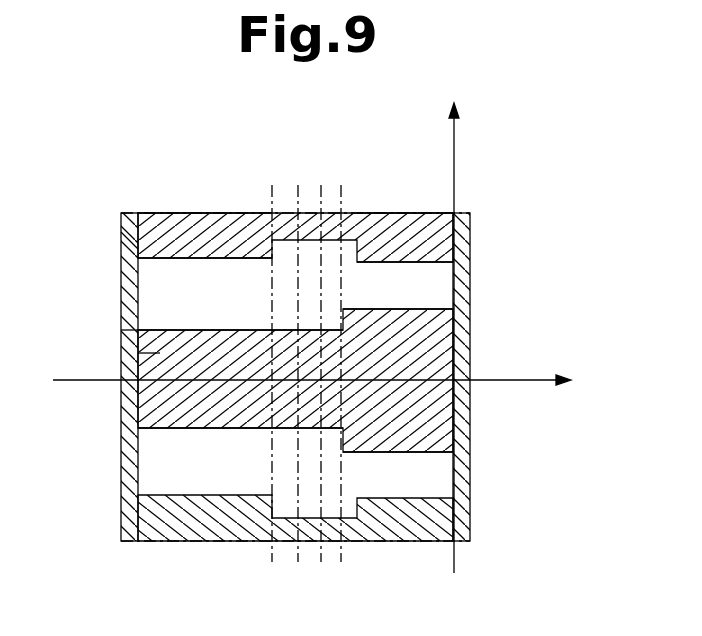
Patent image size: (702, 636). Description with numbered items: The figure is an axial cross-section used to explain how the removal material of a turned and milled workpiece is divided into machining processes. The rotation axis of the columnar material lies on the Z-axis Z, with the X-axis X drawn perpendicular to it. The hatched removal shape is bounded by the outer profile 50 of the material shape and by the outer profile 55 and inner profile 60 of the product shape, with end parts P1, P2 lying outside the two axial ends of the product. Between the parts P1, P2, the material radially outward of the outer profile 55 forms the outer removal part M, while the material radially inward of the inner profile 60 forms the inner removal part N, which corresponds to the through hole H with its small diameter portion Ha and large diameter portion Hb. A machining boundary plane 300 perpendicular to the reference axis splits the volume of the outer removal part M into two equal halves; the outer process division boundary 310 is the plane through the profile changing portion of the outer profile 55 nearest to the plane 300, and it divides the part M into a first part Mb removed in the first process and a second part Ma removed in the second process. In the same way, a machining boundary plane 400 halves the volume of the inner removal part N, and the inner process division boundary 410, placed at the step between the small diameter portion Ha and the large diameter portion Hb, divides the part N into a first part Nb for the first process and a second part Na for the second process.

The outer profile of the material shape 50 is at (196, 218).
The outer profile of the product shape 55 is at (231, 260).
The inner profile of the product shape 60 is at (155, 420).
The machining boundary plane 300 is at (298, 187).
The outer process division boundary 310 is at (272, 184).
The machining boundary plane 400 is at (321, 566).
The inner process division boundary 410 is at (341, 566).
The outer removal part M is at (166, 228).
The second part of the outer removal part Ma is at (242, 226).
The first part of the outer removal part Mb is at (372, 232).
The through hole H is at (130, 335).
The small diameter portion Ha is at (192, 331).
The large diameter portion Hb is at (366, 310).
The inner removal part N is at (160, 353).
The second part of the inner removal part Na is at (155, 395).
The first part of the inner removal part Nb is at (440, 422).
The part of the removal shape P1 is at (130, 274).
The part of the removal shape P2 is at (460, 268).
The X-axis X is at (454, 322).
The Z-axis Z is at (325, 383).